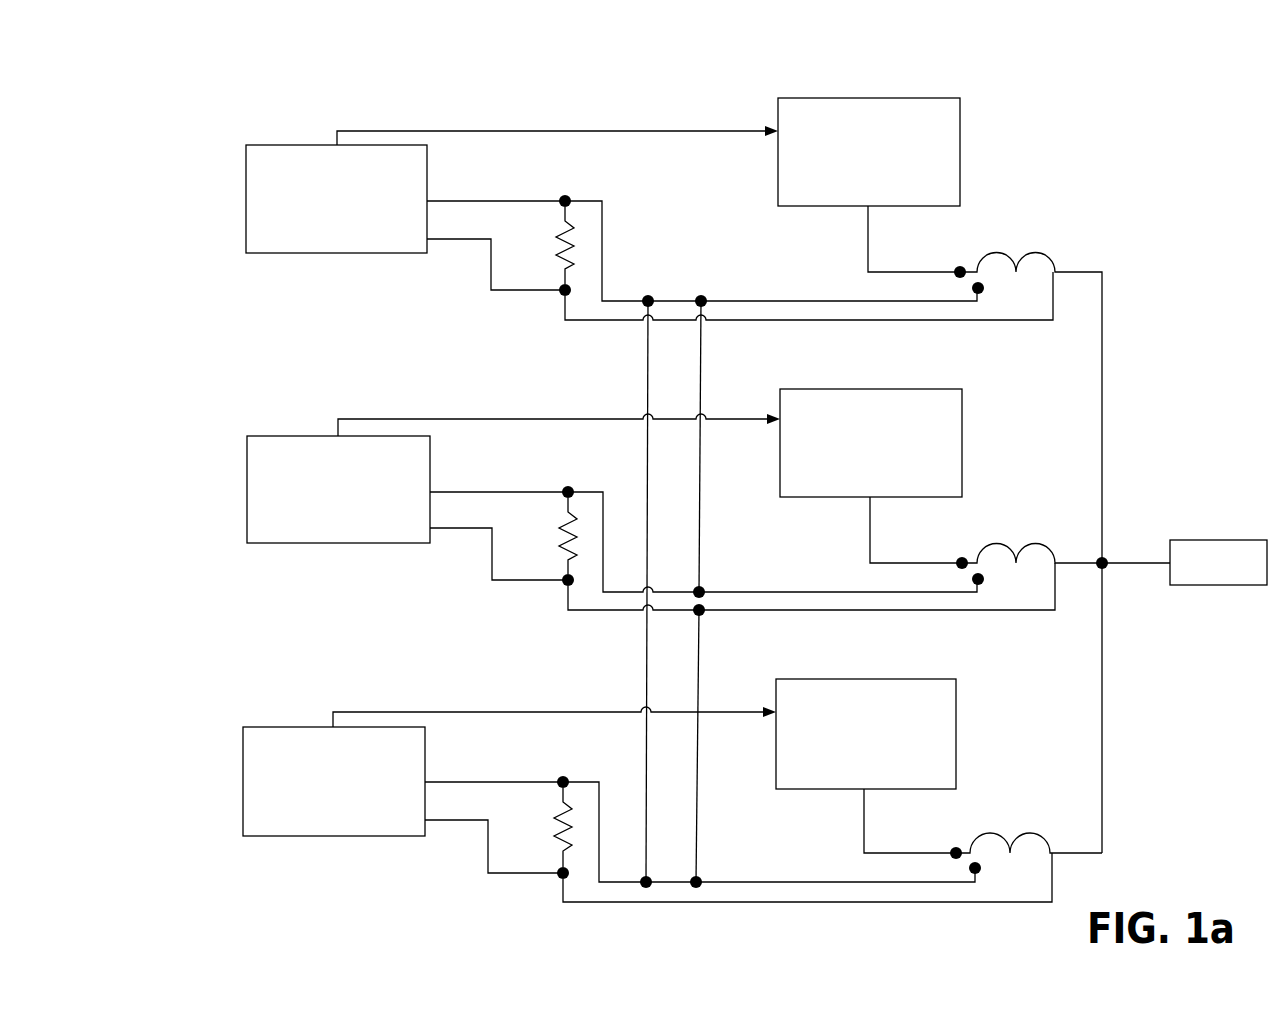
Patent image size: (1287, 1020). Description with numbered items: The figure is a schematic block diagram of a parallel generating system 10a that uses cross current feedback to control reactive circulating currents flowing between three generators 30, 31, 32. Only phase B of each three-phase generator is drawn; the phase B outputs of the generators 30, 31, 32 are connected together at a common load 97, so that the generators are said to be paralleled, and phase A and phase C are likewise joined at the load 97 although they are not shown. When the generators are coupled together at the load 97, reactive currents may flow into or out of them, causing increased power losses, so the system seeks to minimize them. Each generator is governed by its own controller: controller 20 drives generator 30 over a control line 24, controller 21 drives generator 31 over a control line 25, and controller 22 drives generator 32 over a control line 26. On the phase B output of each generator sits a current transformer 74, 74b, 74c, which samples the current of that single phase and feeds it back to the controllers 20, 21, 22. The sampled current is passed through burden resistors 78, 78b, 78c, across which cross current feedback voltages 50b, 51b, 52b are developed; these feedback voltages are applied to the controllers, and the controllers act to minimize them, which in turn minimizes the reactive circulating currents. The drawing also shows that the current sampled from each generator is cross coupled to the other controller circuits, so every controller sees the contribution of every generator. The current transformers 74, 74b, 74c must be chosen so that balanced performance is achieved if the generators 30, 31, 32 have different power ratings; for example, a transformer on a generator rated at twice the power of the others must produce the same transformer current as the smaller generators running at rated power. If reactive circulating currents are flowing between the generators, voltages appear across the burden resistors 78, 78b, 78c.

The parallel generating system 10a is at (228, 103).
The controller 20 is at (246, 197).
The controller 21 is at (247, 490).
The controller 22 is at (243, 780).
The control signal line to generator 24 is at (595, 130).
The control signal line to generator 25 is at (595, 418).
The control signal line to generator 26 is at (592, 710).
The generator 30 is at (868, 98).
The generator 31 is at (870, 389).
The generator 32 is at (863, 679).
The cross current feedback voltage 50b is at (553, 198).
The cross current feedback voltage 51b is at (555, 490).
The cross current feedback voltage 52b is at (548, 780).
The current transformer 74 is at (1048, 260).
The current transformer 74b is at (1042, 547).
The current transformer 74c is at (1037, 840).
The burden resistor 78 is at (567, 267).
The burden resistor 78b is at (570, 560).
The burden resistor 78c is at (565, 850).
The load 97 is at (1202, 540).
The phase B is at (870, 260).